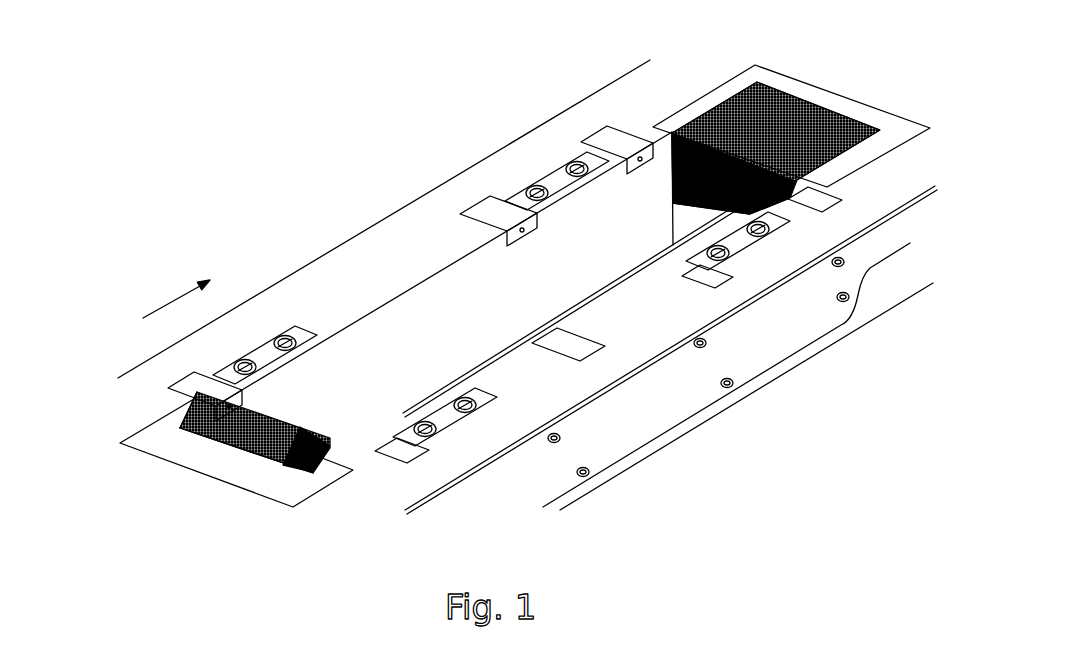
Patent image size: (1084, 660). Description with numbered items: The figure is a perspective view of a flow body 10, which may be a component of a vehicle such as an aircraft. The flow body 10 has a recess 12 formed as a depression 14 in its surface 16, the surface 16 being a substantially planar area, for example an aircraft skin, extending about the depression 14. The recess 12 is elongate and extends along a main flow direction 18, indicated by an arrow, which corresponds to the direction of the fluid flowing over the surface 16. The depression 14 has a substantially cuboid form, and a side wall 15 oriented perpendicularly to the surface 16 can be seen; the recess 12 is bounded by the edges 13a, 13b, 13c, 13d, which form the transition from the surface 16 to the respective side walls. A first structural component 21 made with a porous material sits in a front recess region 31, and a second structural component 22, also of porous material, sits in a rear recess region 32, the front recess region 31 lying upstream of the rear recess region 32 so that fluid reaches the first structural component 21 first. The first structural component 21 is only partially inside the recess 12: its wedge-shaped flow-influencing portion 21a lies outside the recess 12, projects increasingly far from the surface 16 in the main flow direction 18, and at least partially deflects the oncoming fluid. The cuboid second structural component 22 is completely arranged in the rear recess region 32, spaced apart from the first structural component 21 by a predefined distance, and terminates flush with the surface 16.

The flow body 10 is at (310, 132).
The recess 12 is at (485, 293).
The depression 14 is at (485, 293).
The edge 13a is at (226, 449).
The edge 13b is at (286, 288).
The edge 13c is at (793, 97).
The edge 13d is at (693, 256).
The side wall 15 is at (416, 331).
The surface 16 is at (605, 108).
The main flow direction 18 is at (177, 307).
The first structural component 21 is at (297, 457).
The flow-influencing portion 21a is at (171, 402).
The second structural component 22 is at (838, 150).
The front recess region 31 is at (326, 483).
The rear recess region 32 is at (684, 88).